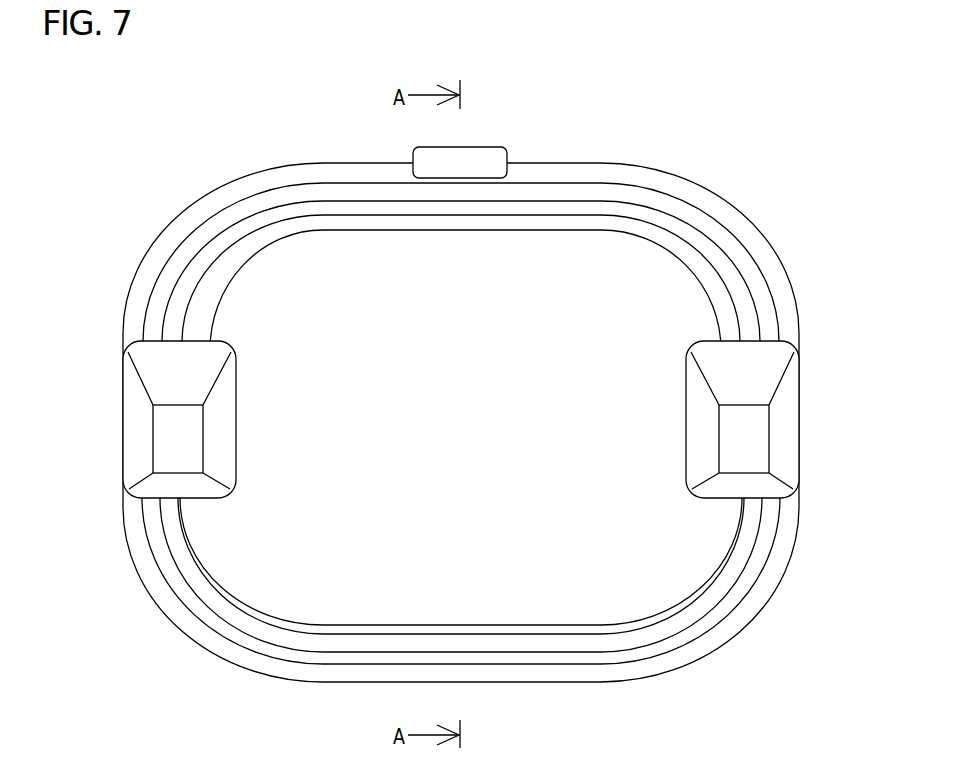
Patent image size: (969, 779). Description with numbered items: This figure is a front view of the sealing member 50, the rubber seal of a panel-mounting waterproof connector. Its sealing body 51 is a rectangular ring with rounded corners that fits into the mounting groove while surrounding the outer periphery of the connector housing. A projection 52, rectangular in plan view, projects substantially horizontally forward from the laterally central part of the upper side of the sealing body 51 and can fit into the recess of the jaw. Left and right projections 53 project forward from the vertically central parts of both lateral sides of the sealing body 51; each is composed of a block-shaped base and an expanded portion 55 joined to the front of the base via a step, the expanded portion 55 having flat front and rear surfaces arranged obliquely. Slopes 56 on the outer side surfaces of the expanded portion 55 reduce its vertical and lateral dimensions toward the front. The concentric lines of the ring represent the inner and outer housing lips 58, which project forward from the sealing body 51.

The sealing member 50 is at (570, 162).
The sealing body 51 is at (513, 683).
The projection 52 is at (481, 160).
The left and right projections 53 is at (123, 411).
The expanded portion 55 is at (207, 305).
The slopes 56 is at (142, 446).
The inner and outer housing lips 58 is at (652, 230).